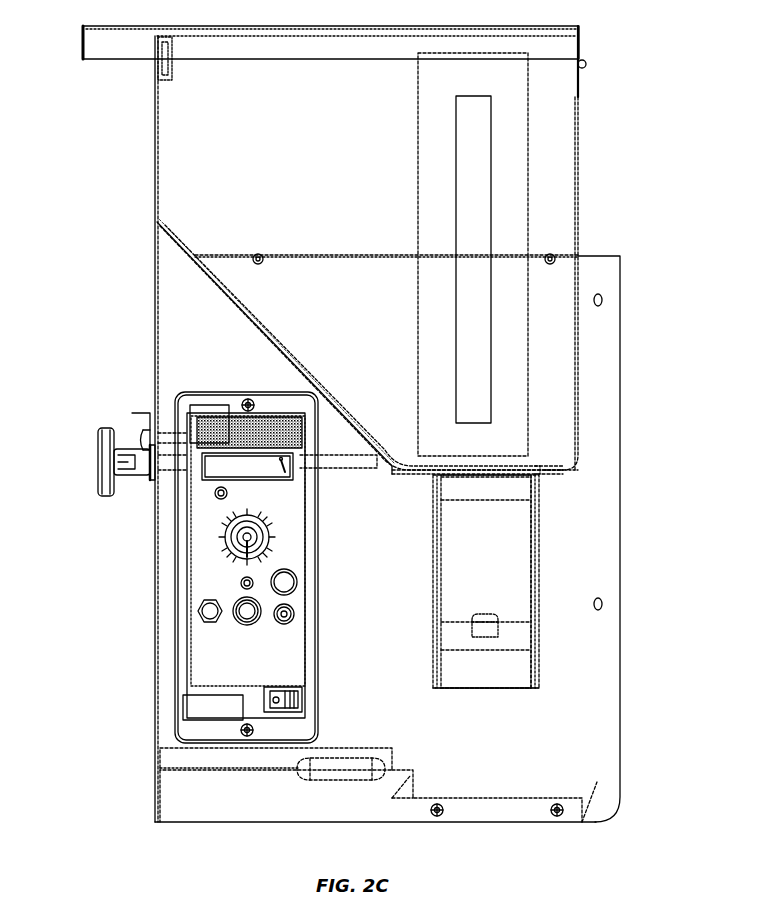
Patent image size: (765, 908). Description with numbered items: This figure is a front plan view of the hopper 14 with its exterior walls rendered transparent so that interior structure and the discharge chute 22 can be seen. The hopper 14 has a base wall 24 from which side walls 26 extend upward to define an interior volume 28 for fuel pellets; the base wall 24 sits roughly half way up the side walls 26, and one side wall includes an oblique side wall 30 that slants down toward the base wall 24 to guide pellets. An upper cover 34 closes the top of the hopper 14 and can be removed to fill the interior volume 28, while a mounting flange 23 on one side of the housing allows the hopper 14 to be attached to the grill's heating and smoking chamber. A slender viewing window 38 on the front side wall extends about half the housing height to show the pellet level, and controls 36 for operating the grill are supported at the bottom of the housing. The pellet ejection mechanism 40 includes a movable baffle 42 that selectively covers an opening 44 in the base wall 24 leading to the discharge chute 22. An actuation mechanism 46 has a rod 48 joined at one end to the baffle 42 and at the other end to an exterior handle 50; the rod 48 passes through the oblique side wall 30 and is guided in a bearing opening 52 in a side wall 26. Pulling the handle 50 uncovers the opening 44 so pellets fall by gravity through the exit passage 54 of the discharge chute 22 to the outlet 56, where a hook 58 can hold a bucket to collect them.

The hopper 14 is at (612, 58).
The discharge chute 22 is at (538, 582).
The mounting flange 23 is at (612, 352).
The base wall 24 is at (560, 470).
The side walls 26 is at (157, 140).
The interior volume 28 is at (557, 180).
The oblique side wall 30 is at (292, 358).
The upper cover 34 is at (245, 26).
The controls 36 is at (213, 645).
The viewing window 38 is at (492, 338).
The pellet ejection mechanism 40 is at (560, 522).
The movable baffle 42 is at (540, 466).
The opening 44 is at (478, 480).
The actuation mechanism 46 is at (360, 480).
The rod 48 is at (357, 455).
The handle 50 is at (96, 452).
The bearing opening 52 is at (146, 482).
The exit passage 54 is at (520, 588).
The outlet 56 is at (500, 680).
The hook 58 is at (480, 610).